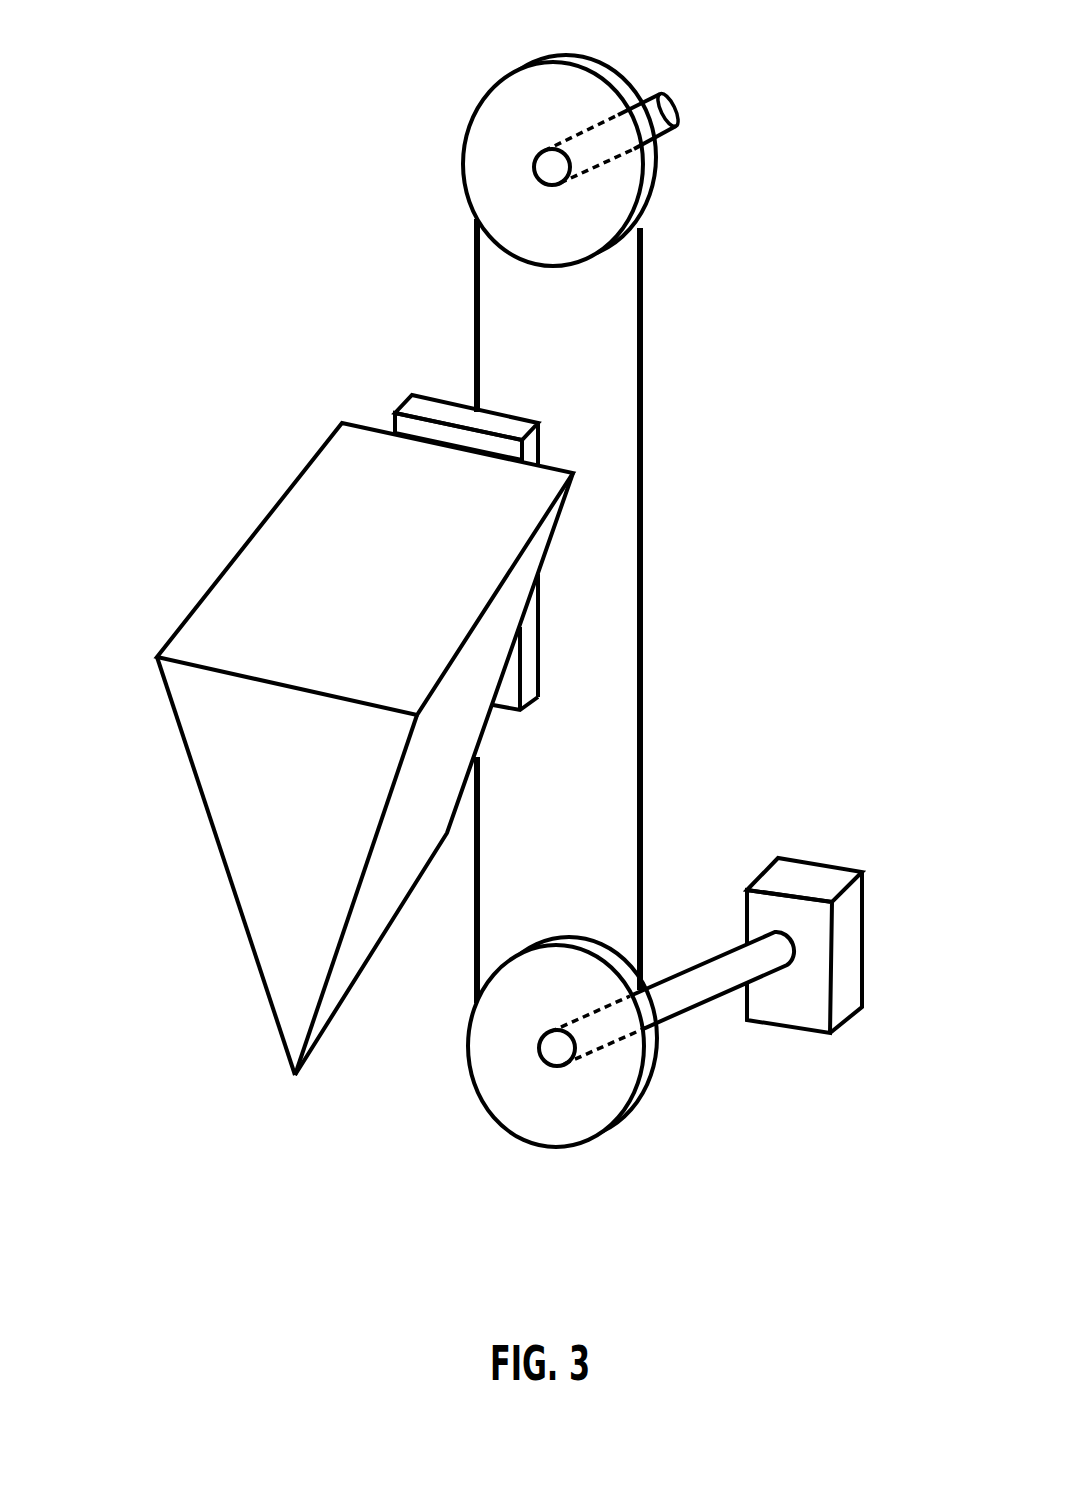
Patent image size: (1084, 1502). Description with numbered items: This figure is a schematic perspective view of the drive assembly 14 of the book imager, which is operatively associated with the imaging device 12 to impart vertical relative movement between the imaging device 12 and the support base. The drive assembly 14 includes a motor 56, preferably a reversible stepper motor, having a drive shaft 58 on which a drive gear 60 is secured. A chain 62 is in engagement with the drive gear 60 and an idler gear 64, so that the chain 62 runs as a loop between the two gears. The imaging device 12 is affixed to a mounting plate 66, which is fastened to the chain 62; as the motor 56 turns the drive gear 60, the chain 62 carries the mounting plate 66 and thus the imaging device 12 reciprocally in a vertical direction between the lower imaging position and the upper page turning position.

The imaging device 12 is at (222, 872).
The drive assembly 14 is at (723, 342).
The motor 56 is at (805, 872).
The drive shaft 58 is at (703, 987).
The drive gear 60 is at (500, 1073).
The chain 62 is at (643, 668).
The idler gear 64 is at (558, 97).
The mounting plate 66 is at (440, 408).